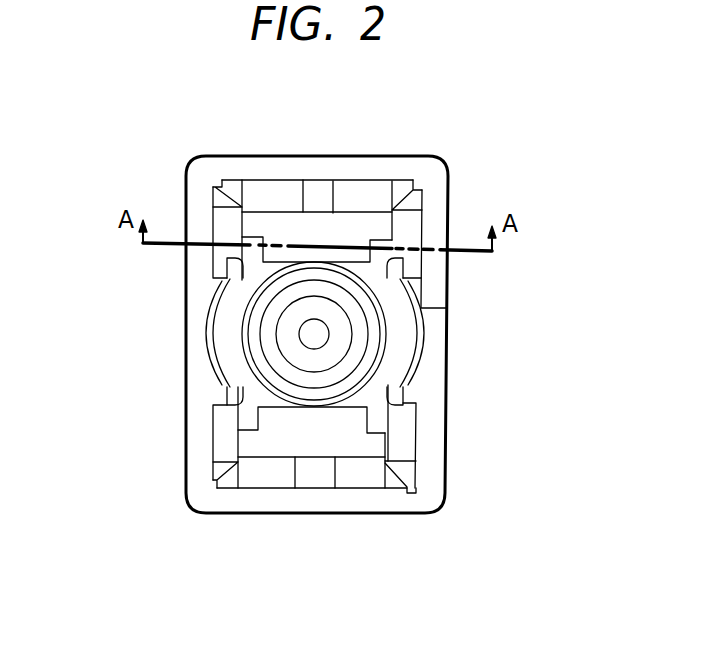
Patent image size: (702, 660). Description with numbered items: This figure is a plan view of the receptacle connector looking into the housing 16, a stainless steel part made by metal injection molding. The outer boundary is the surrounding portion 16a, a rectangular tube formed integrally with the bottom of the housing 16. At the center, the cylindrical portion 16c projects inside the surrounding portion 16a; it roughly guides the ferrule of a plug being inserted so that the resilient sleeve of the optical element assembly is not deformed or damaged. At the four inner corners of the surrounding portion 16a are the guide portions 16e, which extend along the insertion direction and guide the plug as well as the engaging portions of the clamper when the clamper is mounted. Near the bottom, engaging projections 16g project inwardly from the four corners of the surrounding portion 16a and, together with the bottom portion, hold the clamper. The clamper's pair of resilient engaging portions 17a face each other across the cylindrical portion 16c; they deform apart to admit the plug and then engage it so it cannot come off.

The housing 16 is at (456, 174).
The surrounding portion 16a is at (430, 475).
The cylindrical portion 16c is at (358, 346).
The guide portions 16e is at (232, 183).
The engaging projections 16g is at (227, 232).
The resilient engaging portions 17a is at (280, 240).